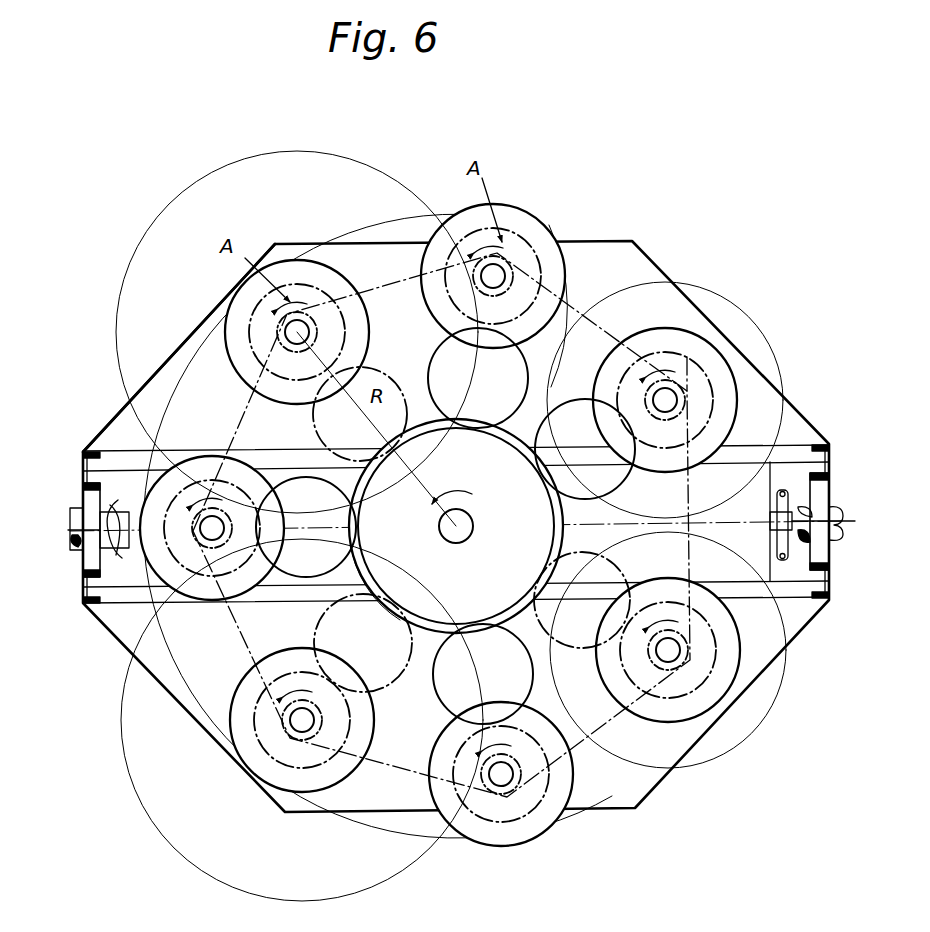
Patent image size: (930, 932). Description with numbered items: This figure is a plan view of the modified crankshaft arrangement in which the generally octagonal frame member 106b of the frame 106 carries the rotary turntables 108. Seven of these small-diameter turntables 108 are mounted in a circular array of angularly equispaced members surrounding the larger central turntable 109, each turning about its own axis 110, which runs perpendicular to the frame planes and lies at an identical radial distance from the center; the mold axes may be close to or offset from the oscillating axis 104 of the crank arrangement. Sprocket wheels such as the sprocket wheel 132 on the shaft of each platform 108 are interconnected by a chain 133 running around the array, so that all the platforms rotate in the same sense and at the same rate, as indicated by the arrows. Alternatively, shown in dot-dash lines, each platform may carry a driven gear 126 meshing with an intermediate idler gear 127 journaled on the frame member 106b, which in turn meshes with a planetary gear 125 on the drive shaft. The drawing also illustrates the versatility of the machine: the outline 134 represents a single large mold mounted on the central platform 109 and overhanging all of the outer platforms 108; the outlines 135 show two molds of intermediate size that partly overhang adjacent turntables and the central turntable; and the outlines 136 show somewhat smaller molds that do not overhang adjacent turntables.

The oscillating axis 104 is at (118, 530).
The frame 106 is at (183, 317).
The frame member 106b is at (155, 385).
The turntable 108 is at (305, 268).
The central turntable 109 is at (527, 522).
The axis 110 is at (667, 400).
The planetary gear 125 is at (380, 582).
The driven gear 126 is at (532, 242).
The intermediate gear 127 is at (527, 372).
The sprocket wheel 132 is at (320, 733).
The chain 133 is at (397, 775).
The large mold outline 134 is at (645, 798).
The intermediate-size molds 135 is at (158, 222).
The smaller molds 136 is at (717, 288).